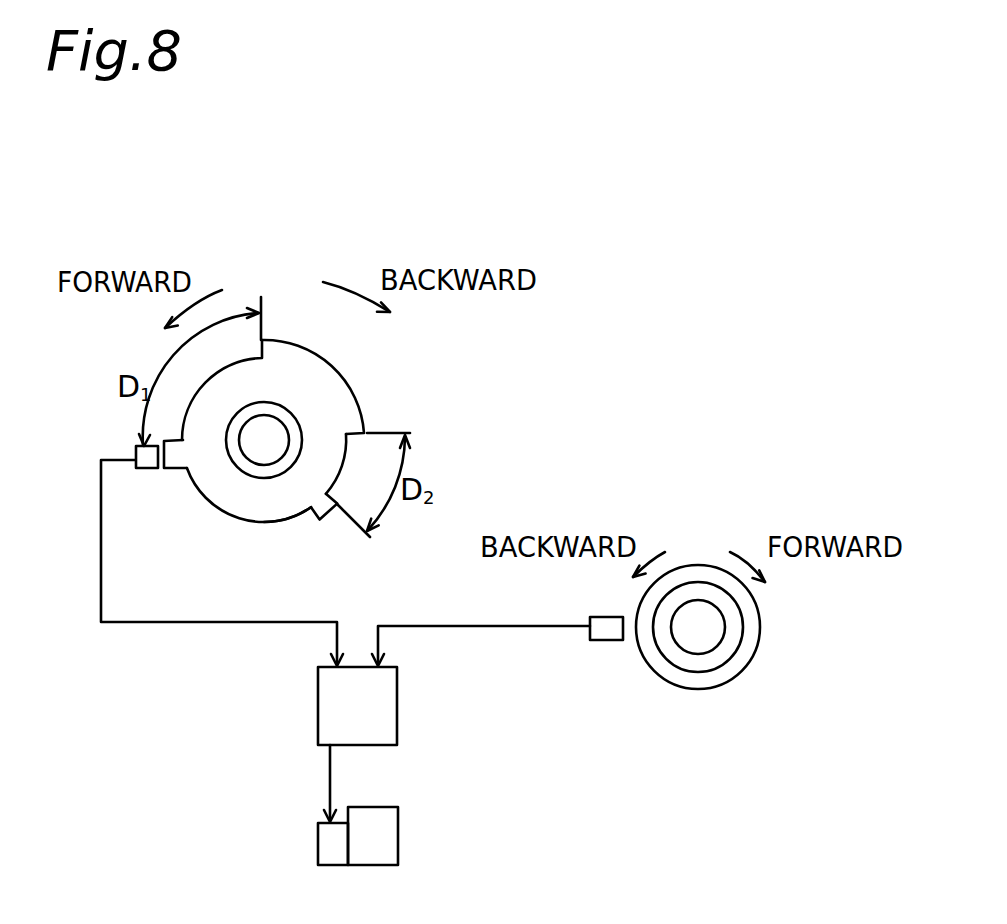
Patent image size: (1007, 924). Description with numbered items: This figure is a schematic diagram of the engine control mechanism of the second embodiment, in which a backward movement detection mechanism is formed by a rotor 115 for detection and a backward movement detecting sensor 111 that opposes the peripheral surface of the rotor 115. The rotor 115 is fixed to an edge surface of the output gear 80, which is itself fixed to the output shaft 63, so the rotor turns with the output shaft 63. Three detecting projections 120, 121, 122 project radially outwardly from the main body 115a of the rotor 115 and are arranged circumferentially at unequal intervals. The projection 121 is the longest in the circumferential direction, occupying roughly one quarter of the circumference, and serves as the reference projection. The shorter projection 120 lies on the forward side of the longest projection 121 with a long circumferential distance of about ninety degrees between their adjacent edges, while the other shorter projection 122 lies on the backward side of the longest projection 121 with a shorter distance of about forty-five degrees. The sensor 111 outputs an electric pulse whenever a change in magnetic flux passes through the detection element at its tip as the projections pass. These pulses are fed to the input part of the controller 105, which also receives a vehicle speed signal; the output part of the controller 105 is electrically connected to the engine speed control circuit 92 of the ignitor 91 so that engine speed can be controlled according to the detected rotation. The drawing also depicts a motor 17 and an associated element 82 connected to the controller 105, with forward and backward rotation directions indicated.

The motor 17 is at (693, 632).
The output shaft 63 is at (262, 452).
The output gear 80 is at (243, 477).
The motor gear 82 is at (755, 652).
The ignitor 91 is at (398, 840).
The engine speed control circuit 92 is at (318, 853).
The controller 105 is at (397, 715).
The backward movement detecting sensor 111 is at (135, 448).
The rotor for detection 115 is at (218, 493).
The main body of the rotor 115a is at (228, 498).
The detecting projection 120 is at (183, 470).
The longest detecting projection 121 is at (340, 387).
The detecting projection 122 is at (331, 520).